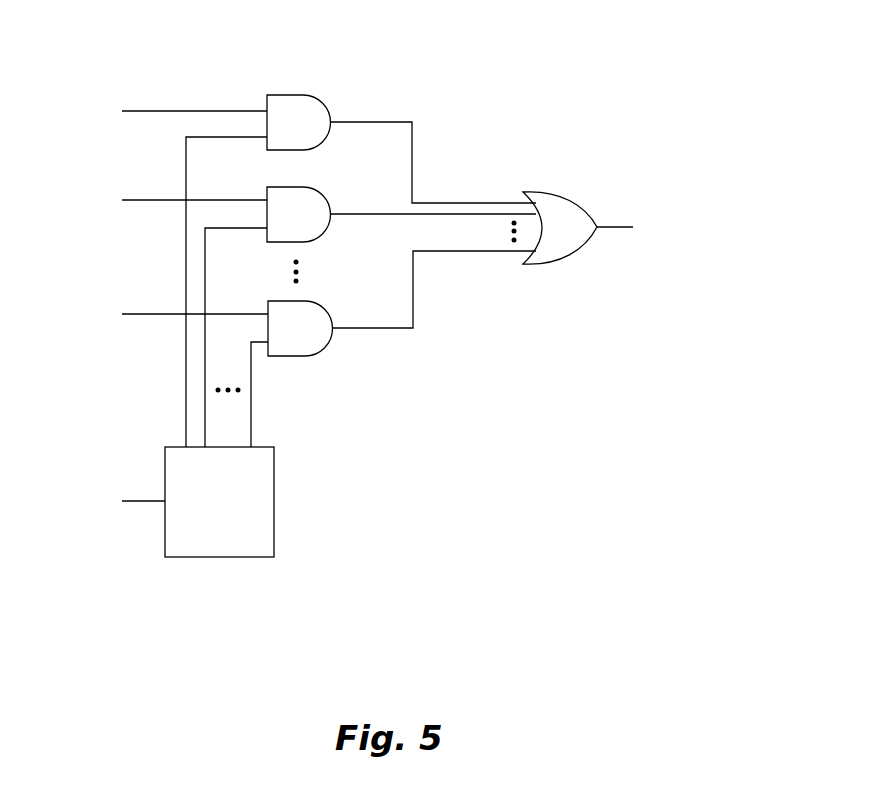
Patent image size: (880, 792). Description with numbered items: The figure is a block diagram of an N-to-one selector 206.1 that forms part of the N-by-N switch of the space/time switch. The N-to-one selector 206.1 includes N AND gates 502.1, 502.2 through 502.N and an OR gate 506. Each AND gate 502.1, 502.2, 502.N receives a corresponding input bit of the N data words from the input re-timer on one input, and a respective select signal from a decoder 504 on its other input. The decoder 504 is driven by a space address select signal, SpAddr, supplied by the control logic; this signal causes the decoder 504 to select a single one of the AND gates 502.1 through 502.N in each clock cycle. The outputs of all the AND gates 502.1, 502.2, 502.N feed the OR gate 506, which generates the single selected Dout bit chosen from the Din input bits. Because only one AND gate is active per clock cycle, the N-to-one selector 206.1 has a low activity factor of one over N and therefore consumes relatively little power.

The N-to-1 selector 206.1 is at (386, 250).
The AND gate 502.1 is at (322, 96).
The AND gate 502.2 is at (322, 188).
The AND gate 502.N is at (323, 302).
The decoder 504 is at (204, 528).
The OR gate 506 is at (577, 216).